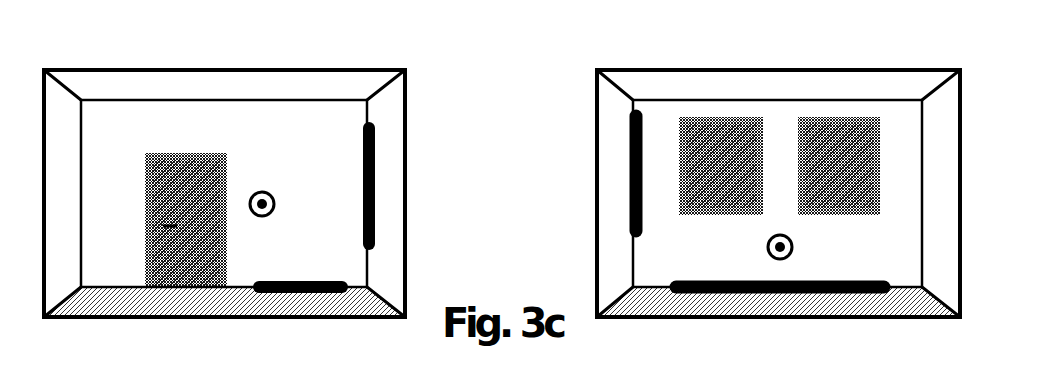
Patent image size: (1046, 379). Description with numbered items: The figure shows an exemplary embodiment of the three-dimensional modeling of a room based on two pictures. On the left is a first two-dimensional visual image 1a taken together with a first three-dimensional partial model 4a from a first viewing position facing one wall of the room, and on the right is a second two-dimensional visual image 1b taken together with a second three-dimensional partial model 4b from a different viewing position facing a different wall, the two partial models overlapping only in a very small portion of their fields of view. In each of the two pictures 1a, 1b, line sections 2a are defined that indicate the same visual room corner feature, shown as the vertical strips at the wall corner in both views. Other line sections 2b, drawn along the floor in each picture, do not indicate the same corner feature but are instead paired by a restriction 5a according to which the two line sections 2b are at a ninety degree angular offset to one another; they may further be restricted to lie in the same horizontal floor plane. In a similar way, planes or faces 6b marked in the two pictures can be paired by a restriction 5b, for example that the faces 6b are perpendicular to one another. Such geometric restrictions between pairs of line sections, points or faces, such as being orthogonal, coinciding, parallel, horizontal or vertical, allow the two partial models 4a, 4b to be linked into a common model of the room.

The first 2D-visual-image 1a is at (224, 172).
The first 3D-partial-model 4a is at (180, 47).
The second 2D-visual-image 1b is at (778, 172).
The second 3D-partial-model 4b is at (783, 50).
The line sections 2a is at (631, 127).
The other line sections 2b is at (571, 244).
The restriction 5a is at (687, 281).
The restriction 5b is at (767, 247).
The planes or faces 6b is at (521, 184).